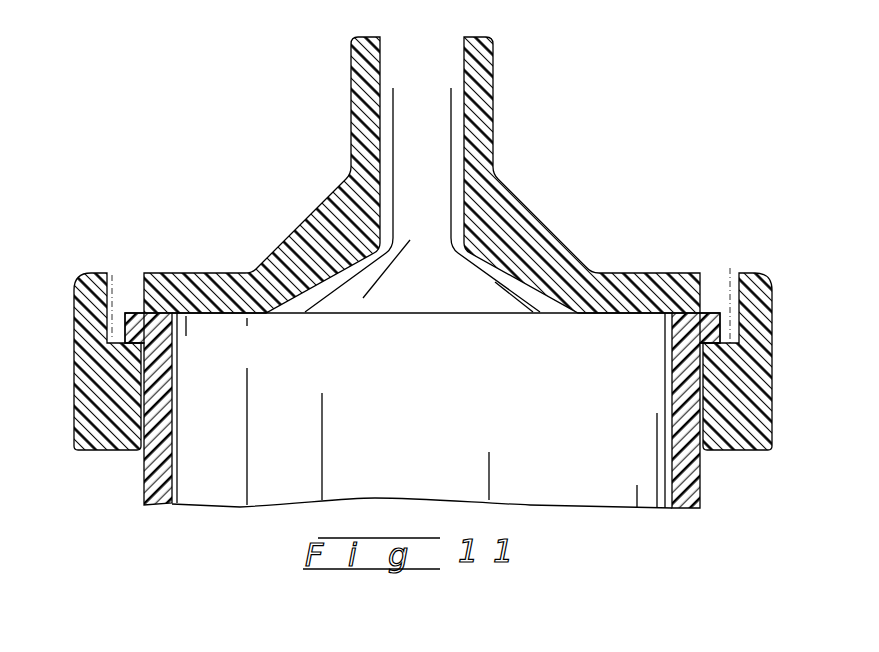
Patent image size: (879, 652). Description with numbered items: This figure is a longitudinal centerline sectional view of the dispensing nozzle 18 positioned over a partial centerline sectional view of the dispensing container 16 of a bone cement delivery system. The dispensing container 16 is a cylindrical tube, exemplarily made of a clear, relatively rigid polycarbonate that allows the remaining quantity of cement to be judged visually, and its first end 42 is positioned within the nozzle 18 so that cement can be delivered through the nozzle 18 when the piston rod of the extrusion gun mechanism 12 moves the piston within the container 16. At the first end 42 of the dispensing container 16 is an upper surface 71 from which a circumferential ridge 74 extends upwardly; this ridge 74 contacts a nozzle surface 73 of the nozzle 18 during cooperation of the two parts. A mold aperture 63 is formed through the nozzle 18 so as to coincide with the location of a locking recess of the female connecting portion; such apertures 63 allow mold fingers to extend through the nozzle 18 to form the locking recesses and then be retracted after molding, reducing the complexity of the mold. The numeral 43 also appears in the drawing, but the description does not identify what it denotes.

The dispensing nozzle 18 is at (547, 161).
The mold aperture 63 is at (734, 290).
The dispensing container 16 is at (702, 487).
The extrusion gun mechanism 12 is at (178, 315).
The first end 42 is at (441, 313).
The groove 43 is at (724, 325).
The upper surface 71 is at (141, 298).
The circumferential ridge 74 is at (162, 305).
The nozzle surface 73 is at (648, 313).